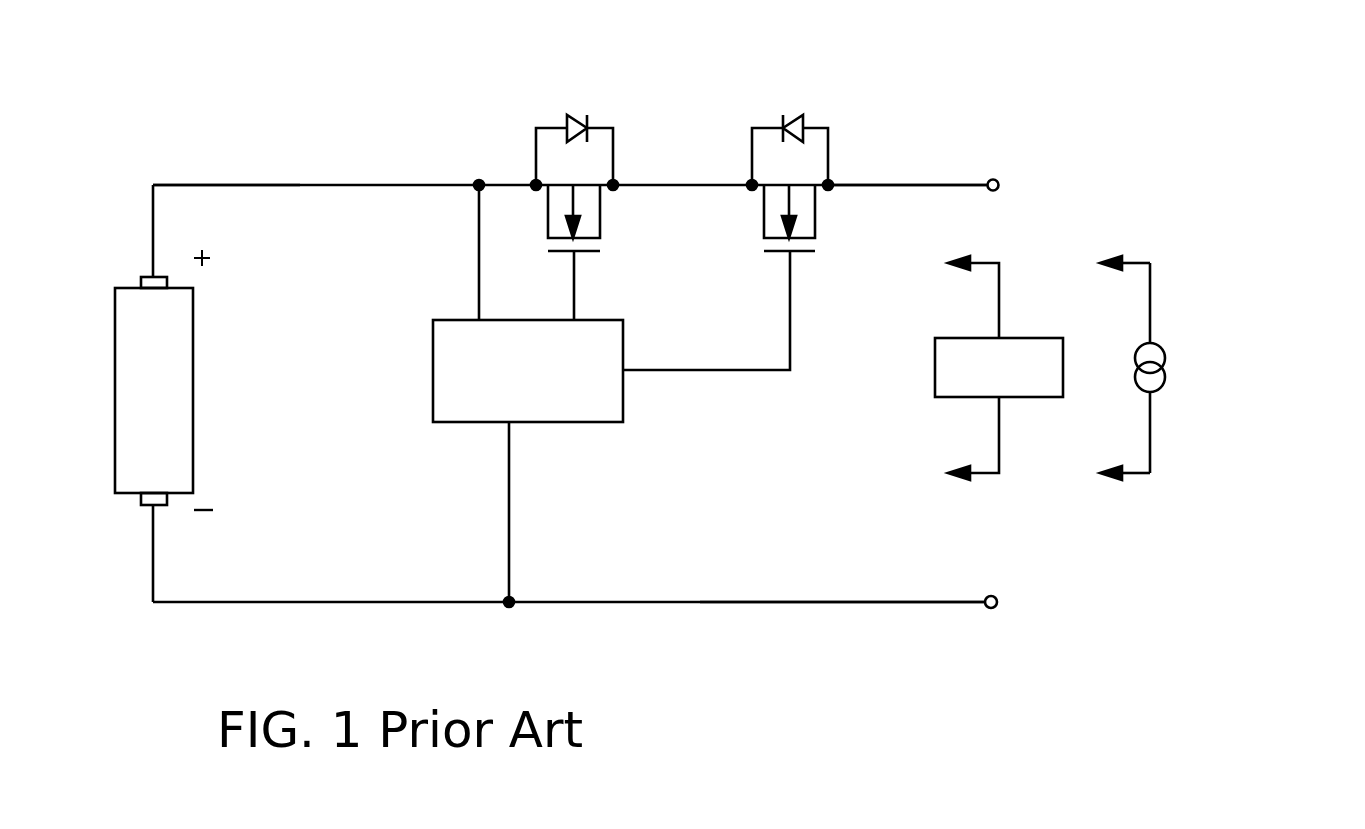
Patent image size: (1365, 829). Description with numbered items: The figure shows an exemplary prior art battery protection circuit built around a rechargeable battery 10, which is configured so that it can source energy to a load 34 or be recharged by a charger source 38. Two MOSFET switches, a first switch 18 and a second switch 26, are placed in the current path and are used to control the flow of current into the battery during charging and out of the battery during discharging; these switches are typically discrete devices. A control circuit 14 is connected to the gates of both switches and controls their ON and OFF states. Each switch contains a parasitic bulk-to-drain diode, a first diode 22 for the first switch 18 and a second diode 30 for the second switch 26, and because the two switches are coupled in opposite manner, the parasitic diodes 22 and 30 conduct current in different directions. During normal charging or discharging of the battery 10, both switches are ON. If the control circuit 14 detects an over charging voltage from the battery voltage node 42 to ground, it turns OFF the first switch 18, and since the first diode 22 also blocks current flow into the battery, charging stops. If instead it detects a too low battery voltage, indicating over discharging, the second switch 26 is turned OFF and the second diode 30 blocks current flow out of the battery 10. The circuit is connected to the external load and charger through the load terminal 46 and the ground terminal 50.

The rechargeable battery 10 is at (173, 460).
The control circuit 14 is at (567, 396).
The MOSFET switch N1 18 is at (598, 252).
The parasitic bulk-to-drain diode D1 22 is at (565, 125).
The MOSFET switch N2 26 is at (816, 252).
The parasitic bulk-to-drain diode D2 30 is at (802, 125).
The load 34 is at (950, 392).
The charger source 38 is at (1162, 392).
The battery voltage node VBATT 42 is at (153, 210).
The load terminal 46 is at (948, 186).
The ground terminal 50 is at (903, 602).